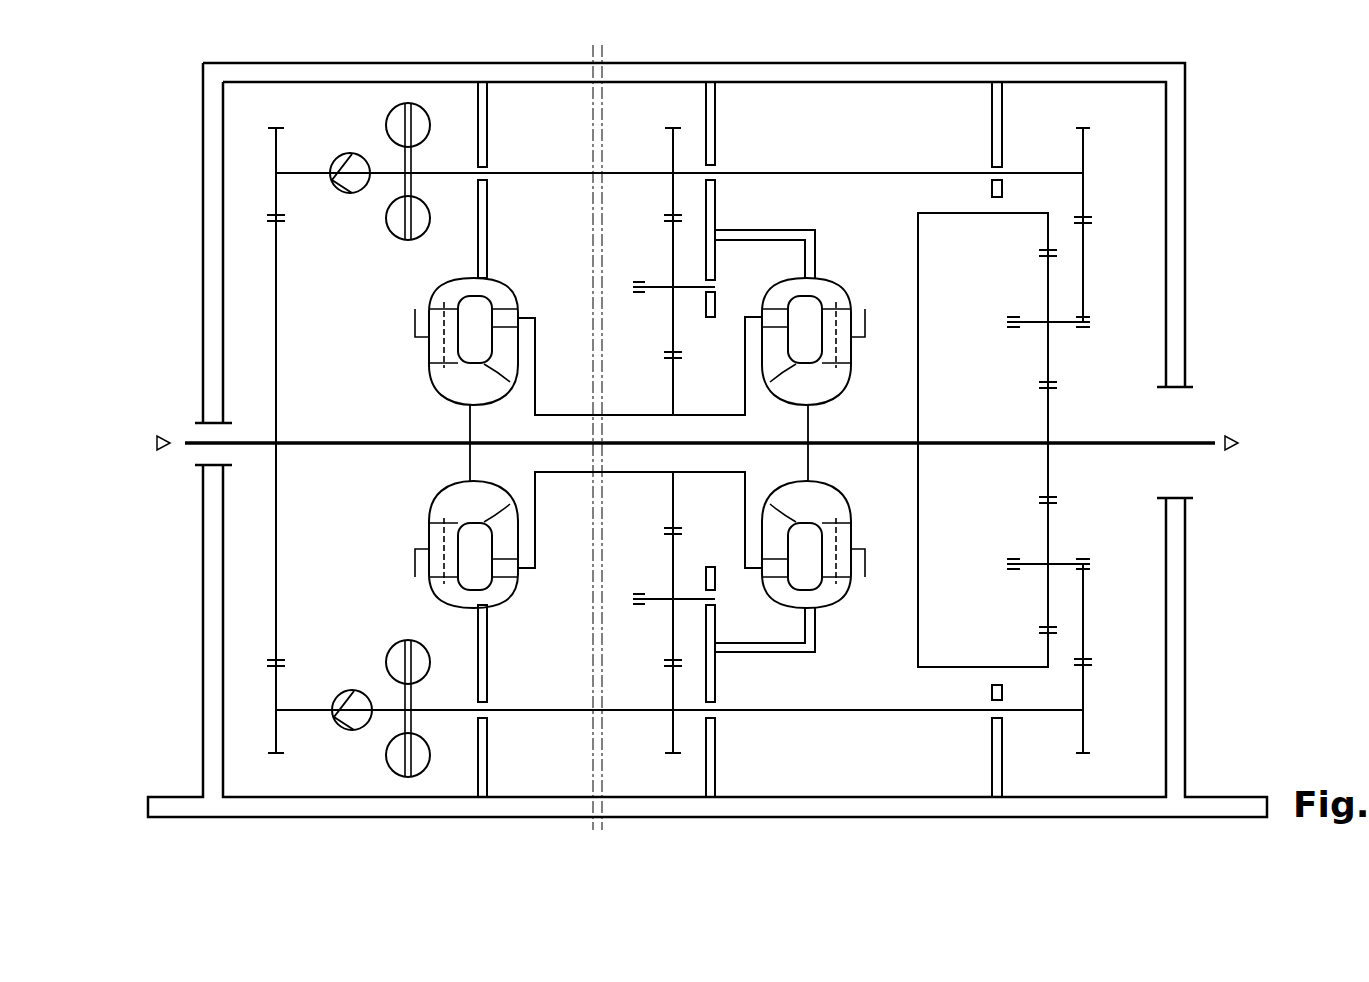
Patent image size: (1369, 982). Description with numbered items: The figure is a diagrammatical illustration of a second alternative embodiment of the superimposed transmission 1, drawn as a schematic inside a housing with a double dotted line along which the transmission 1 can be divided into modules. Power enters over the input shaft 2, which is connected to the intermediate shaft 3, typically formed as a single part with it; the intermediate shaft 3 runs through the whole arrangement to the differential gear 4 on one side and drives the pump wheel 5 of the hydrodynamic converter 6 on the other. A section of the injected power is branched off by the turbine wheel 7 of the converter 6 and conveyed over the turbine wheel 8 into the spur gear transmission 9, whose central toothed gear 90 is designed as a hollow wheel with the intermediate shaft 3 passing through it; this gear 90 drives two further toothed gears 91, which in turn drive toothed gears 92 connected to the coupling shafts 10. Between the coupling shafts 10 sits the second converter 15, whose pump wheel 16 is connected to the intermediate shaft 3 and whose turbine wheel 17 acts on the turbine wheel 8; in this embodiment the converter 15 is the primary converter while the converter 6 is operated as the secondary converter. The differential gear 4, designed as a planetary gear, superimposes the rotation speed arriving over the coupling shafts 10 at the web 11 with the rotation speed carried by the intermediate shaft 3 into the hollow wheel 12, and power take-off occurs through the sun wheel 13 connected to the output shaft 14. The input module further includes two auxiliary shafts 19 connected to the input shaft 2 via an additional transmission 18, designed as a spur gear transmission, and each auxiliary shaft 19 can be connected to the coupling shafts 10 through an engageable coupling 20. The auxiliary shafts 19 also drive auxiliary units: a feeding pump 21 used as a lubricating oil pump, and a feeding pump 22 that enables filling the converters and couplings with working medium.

The superimposed transmission 1 is at (1222, 97).
The input shaft 2 is at (190, 438).
The intermediate shaft 3 is at (365, 438).
The differential gear 4 is at (1021, 440).
The pump wheel 5 is at (510, 352).
The hydrodynamic converter 6 is at (464, 322).
The turbine wheel 7 is at (500, 305).
The turbine wheel 8 is at (630, 478).
The spur gear transmission 9 is at (663, 440).
The coupling shafts 10 is at (840, 165).
The web 11 is at (1045, 340).
The hollow wheel 12 is at (1043, 248).
The sun wheel 13 is at (1050, 467).
The output shaft 14 is at (1207, 438).
The second converter 15 is at (802, 301).
The pump wheel 16 is at (773, 358).
The turbine wheel 17 is at (780, 305).
The additional transmission 18 is at (272, 232).
The auxiliary shaft 19 is at (387, 165).
The engageable coupling 20 is at (426, 112).
The feeding pump 21 is at (346, 152).
The feeding pump 22 is at (355, 690).
The central toothed gear 90 is at (670, 398).
The toothed gears 91 is at (668, 325).
The toothed gears 92 is at (668, 152).